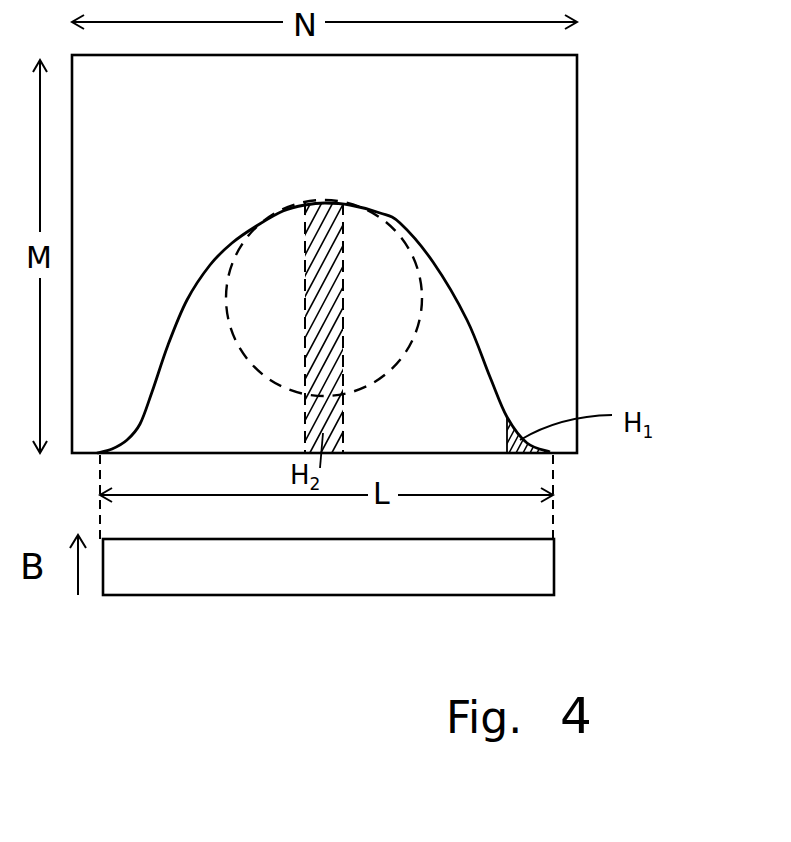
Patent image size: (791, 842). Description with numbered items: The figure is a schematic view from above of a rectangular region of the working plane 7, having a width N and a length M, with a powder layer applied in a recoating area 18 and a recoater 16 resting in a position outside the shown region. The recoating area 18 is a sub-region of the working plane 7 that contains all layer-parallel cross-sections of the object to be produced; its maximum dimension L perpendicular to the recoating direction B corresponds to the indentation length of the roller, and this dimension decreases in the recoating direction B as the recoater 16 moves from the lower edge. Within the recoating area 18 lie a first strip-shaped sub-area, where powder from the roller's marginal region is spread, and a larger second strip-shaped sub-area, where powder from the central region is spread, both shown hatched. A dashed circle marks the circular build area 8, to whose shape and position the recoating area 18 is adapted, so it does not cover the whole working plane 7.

The working plane 7 is at (512, 165).
The build area 8 is at (390, 278).
The recoating area 18 is at (433, 347).
The recoater 16 is at (522, 572).